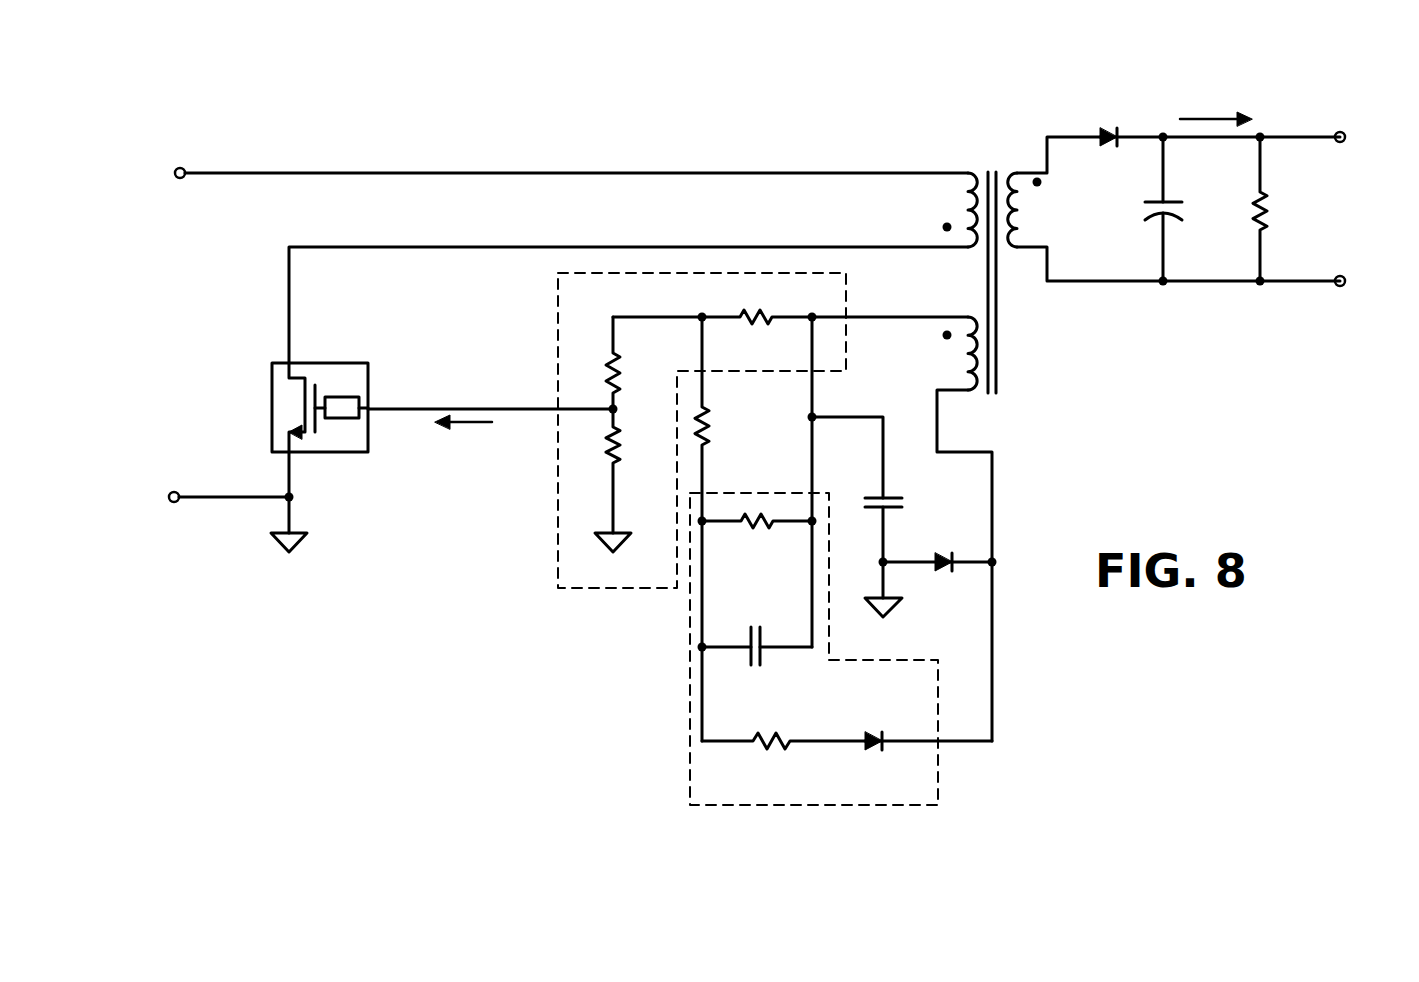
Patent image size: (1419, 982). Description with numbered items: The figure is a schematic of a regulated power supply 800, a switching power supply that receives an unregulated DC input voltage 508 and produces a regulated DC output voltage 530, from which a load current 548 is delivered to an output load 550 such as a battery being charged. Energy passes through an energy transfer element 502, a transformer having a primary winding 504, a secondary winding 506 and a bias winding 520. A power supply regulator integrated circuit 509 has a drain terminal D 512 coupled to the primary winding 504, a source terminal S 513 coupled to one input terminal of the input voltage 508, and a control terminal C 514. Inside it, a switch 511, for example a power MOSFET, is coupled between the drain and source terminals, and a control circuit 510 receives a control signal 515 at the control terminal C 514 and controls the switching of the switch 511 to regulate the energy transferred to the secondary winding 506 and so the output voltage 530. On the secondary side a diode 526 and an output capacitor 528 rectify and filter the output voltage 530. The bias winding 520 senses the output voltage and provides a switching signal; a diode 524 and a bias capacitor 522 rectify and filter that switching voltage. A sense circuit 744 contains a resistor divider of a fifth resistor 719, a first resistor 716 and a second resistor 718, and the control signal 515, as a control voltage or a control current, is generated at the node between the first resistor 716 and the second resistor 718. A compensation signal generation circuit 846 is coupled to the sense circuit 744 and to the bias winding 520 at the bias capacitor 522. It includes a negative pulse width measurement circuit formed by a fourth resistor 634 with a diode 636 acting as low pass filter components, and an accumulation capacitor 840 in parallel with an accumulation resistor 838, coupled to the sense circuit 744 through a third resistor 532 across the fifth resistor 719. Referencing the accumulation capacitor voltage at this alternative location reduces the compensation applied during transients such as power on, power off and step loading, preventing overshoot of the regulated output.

The regulated power supply 800 is at (311, 112).
The unregulated DC input VIN 508 is at (162, 302).
The drain terminal D 512 is at (260, 328).
The power supply regulator integrated circuit 509 is at (328, 357).
The switch 511 is at (286, 400).
The control circuit 510 is at (344, 417).
The source terminal S 513 is at (262, 463).
The control terminal C 514 is at (390, 438).
The control signal 515 is at (446, 398).
The sense circuit 744 is at (556, 559).
The resistor R1 716 is at (626, 371).
The resistor R2 718 is at (624, 438).
The resistor R5 719 is at (757, 330).
The resistor R3 532 is at (717, 440).
The compensation signal generation circuit 846 is at (688, 760).
The accumulation resistor RA 838 is at (760, 530).
The accumulation capacitor CA 840 is at (767, 655).
The resistor R4 634 is at (770, 757).
The diode D2 636 is at (864, 754).
The capacitor CB 522 is at (893, 487).
The diode D3 524 is at (935, 578).
The energy transfer element 502 is at (992, 162).
The primary winding 504 is at (958, 195).
The secondary winding 506 is at (1028, 209).
The bias winding 520 is at (953, 348).
The diode D4 526 is at (1108, 126).
The capacitor Co 528 is at (1178, 192).
The load resistor RO 550 is at (1250, 232).
The load current ILOAD 548 is at (1240, 101).
The regulated DC output voltage VOUT 530 is at (1345, 190).